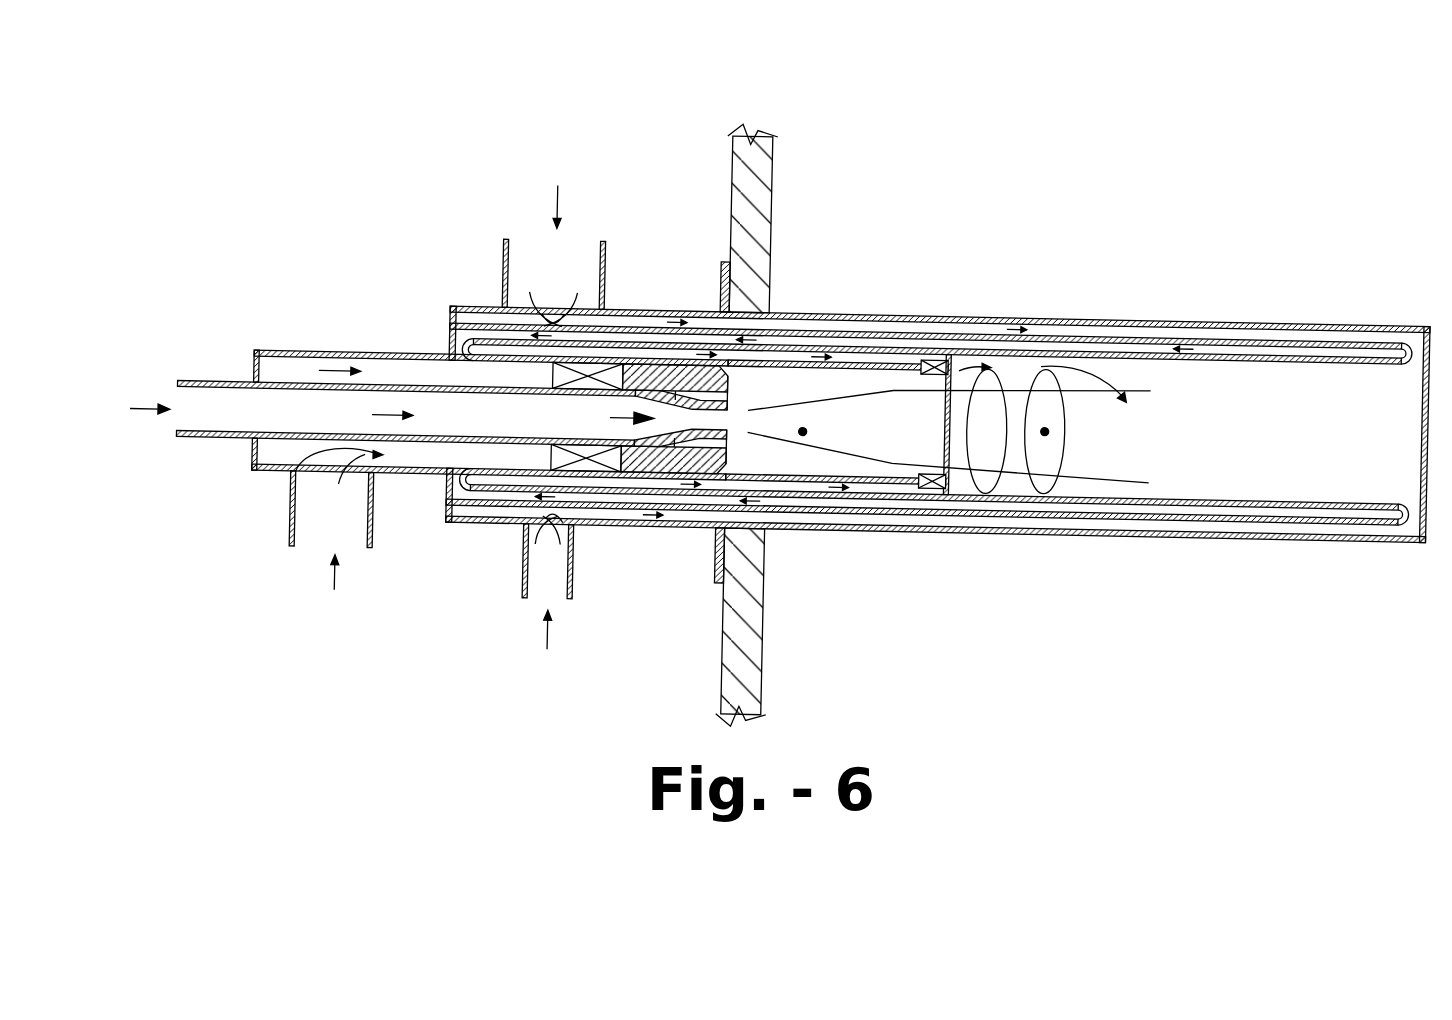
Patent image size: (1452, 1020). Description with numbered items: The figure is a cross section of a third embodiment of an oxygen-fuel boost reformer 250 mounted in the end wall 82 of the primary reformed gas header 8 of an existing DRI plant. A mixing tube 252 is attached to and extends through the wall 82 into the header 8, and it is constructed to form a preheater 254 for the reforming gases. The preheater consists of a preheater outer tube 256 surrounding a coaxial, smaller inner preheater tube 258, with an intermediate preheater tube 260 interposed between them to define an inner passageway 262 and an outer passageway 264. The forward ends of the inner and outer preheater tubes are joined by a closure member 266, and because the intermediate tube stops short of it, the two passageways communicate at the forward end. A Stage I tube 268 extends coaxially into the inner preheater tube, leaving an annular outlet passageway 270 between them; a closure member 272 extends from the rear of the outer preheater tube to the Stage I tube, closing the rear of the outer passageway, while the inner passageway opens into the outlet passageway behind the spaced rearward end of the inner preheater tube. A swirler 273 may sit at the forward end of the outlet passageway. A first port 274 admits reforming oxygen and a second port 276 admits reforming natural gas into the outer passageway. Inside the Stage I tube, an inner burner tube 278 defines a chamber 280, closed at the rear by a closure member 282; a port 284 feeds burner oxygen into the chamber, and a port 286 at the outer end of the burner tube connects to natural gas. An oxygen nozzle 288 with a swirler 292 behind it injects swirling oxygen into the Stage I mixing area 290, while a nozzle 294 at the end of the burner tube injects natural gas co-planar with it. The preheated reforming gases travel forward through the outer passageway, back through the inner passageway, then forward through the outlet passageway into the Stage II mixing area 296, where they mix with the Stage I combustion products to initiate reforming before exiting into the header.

The primary reformed gas header 8 is at (774, 152).
The end wall 82 is at (763, 188).
The oxygen-fuel boost reformer 250 is at (712, 305).
The mixing tube 252 is at (1010, 318).
The preheater 254 is at (1117, 323).
The preheater outer tube 256 is at (1140, 323).
The inner preheater tube 258 is at (1227, 360).
The intermediate preheater tube 260 is at (1347, 347).
The inner passageway 262 is at (1252, 516).
The outer passageway 264 is at (1150, 535).
The closure member 266 is at (1425, 537).
The Stage I tube 268 is at (397, 352).
The annular outlet passageway 270 is at (900, 360).
The closure member 272 is at (452, 328).
The swirler 273 is at (927, 500).
The first port 274 is at (525, 580).
The second port 276 is at (562, 303).
The inner burner tube 278 is at (230, 385).
The chamber 280 is at (287, 452).
The closure member 282 is at (255, 366).
The port 284 is at (335, 463).
The port 286 is at (187, 406).
The nozzle 288 is at (707, 457).
The Stage I mixing area 290 is at (803, 428).
The swirler 292 is at (547, 480).
The nozzle 294 is at (688, 445).
The Stage II mixing area 296 is at (1045, 432).